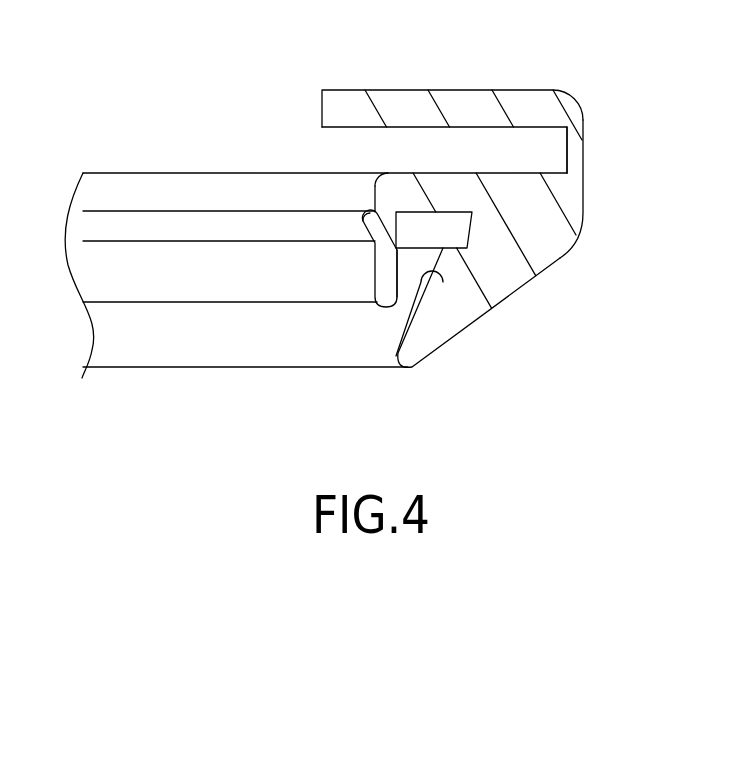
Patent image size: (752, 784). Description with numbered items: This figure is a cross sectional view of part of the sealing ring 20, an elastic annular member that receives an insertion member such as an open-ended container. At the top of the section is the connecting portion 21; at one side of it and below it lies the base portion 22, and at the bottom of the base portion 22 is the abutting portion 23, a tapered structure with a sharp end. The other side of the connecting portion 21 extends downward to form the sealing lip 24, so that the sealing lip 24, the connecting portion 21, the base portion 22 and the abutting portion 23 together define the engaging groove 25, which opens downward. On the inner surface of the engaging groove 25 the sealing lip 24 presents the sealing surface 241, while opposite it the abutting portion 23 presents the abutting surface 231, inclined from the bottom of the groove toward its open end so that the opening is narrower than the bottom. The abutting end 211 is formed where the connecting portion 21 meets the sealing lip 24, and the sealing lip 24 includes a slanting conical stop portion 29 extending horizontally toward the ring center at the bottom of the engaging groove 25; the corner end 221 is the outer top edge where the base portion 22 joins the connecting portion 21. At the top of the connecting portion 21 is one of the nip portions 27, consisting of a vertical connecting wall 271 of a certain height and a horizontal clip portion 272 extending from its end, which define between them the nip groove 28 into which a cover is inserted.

The sealing ring 20 is at (112, 163).
The connecting portion 21 is at (460, 200).
The abutting end 211 is at (372, 185).
The base portion 22 is at (552, 252).
The corner end 221 is at (570, 185).
The abutting portion 23 is at (473, 307).
The abutting surface 231 is at (443, 282).
The sealing lip 24 is at (378, 268).
The sealing surface 241 is at (397, 277).
The engaging groove 25 is at (470, 237).
The nip portion 27 is at (639, 78).
The vertical connecting wall 271 is at (573, 152).
The horizontal clip portion 272 is at (473, 93).
The nip groove 28 is at (474, 154).
The stop portion 29 is at (363, 218).